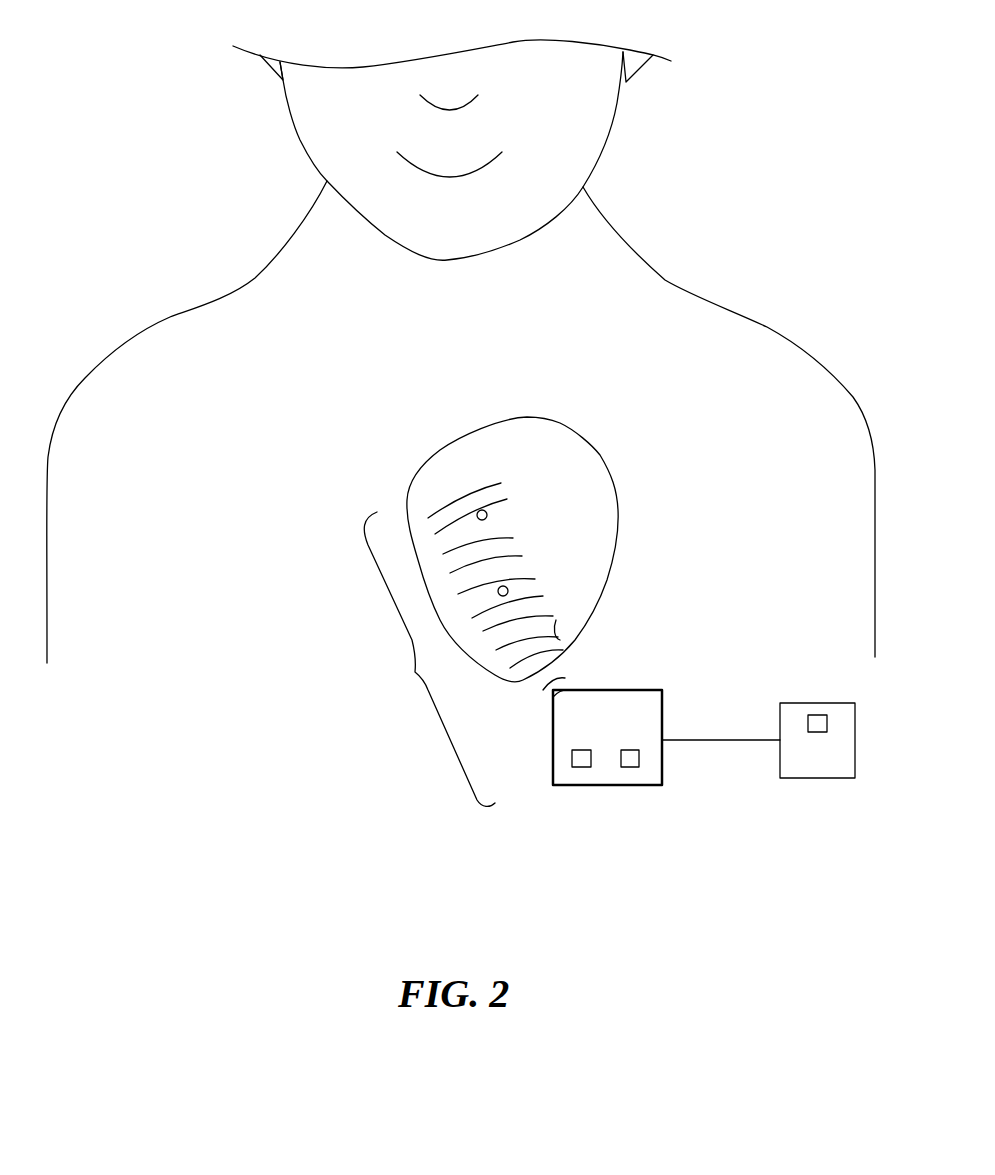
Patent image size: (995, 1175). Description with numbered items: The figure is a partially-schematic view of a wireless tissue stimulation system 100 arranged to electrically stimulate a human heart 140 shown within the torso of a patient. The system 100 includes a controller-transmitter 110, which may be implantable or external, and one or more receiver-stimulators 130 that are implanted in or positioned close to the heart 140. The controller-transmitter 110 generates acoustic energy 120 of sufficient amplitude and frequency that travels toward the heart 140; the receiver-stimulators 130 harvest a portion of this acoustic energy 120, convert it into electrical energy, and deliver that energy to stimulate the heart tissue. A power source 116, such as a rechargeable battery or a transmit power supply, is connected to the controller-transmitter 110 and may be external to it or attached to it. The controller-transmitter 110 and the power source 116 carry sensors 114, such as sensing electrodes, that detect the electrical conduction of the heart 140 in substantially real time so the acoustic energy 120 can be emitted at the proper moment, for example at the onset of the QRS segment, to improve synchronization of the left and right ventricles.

The wireless tissue stimulation system 100 is at (415, 672).
The controller-transmitter 110 is at (667, 725).
The sensors 114 is at (630, 767).
The power source 116 is at (818, 778).
The acoustic energy 120 is at (556, 620).
The receiver-stimulators 130 is at (488, 512).
The heart 140 is at (590, 442).